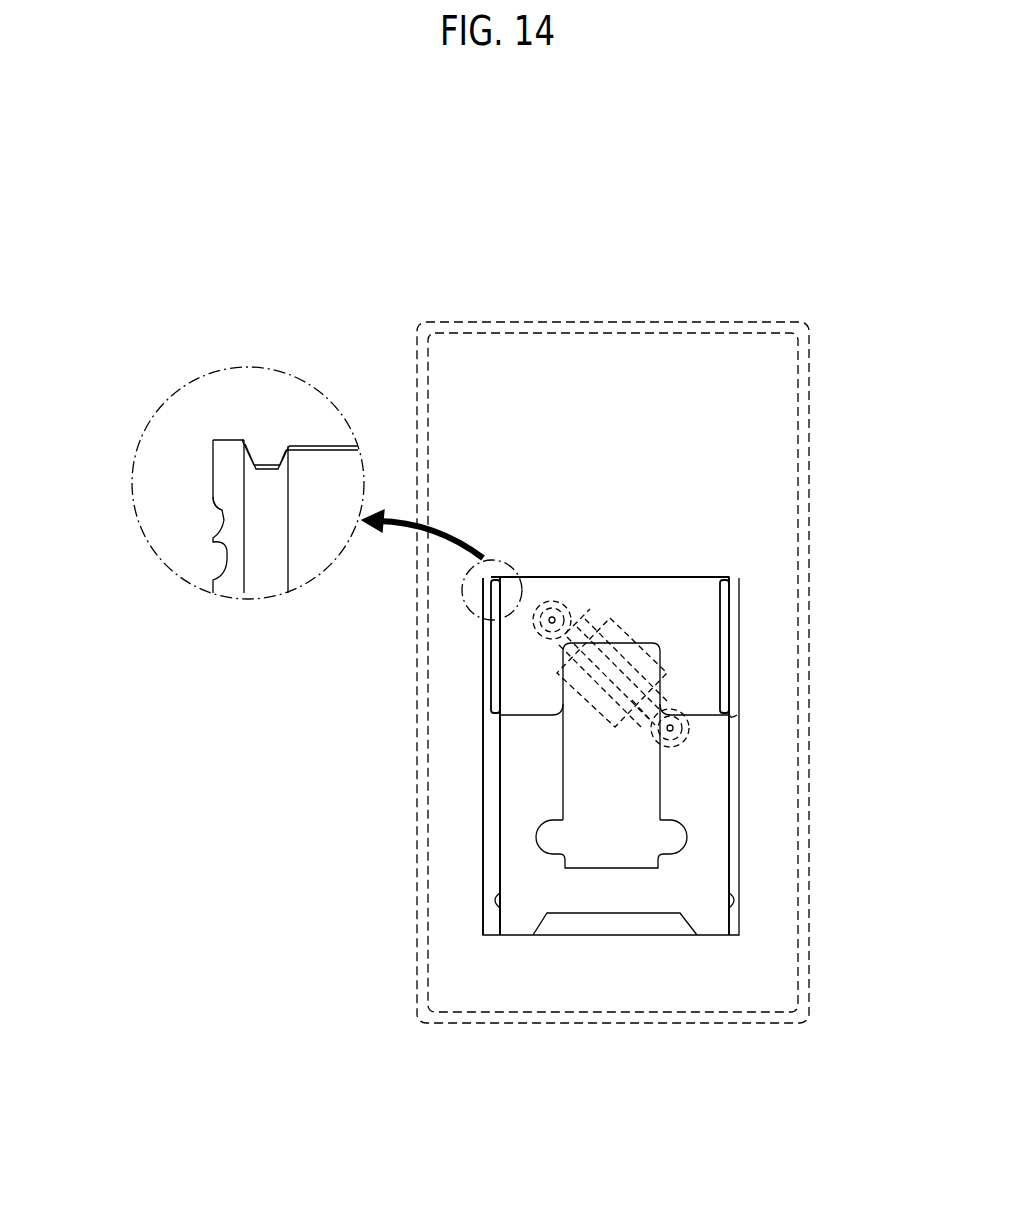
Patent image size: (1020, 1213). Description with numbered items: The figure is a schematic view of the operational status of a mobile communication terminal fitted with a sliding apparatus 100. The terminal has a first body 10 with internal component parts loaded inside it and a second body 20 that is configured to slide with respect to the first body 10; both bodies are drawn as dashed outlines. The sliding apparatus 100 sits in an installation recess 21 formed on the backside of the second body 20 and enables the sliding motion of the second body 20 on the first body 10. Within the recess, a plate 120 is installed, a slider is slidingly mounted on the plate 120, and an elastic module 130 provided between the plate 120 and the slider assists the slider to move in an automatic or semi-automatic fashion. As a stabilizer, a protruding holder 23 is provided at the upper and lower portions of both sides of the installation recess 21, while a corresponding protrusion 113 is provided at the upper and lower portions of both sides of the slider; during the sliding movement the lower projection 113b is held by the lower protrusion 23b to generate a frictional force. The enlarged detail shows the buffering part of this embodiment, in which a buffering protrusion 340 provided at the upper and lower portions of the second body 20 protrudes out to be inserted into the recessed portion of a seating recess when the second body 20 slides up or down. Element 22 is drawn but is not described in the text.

The first body 10 is at (800, 380).
The second body 20 is at (773, 482).
The sliding apparatus 100 is at (622, 937).
The protrusion 113 is at (716, 647).
The lower projection 113b is at (735, 700).
The plate 120 is at (705, 808).
The elastic module 130 is at (604, 613).
The installation recess 21 is at (731, 758).
The support portion 22 is at (630, 838).
The protruding holder 23 is at (386, 756).
The lower protrusion 23b is at (422, 825).
The buffering protrusion 340 is at (267, 457).